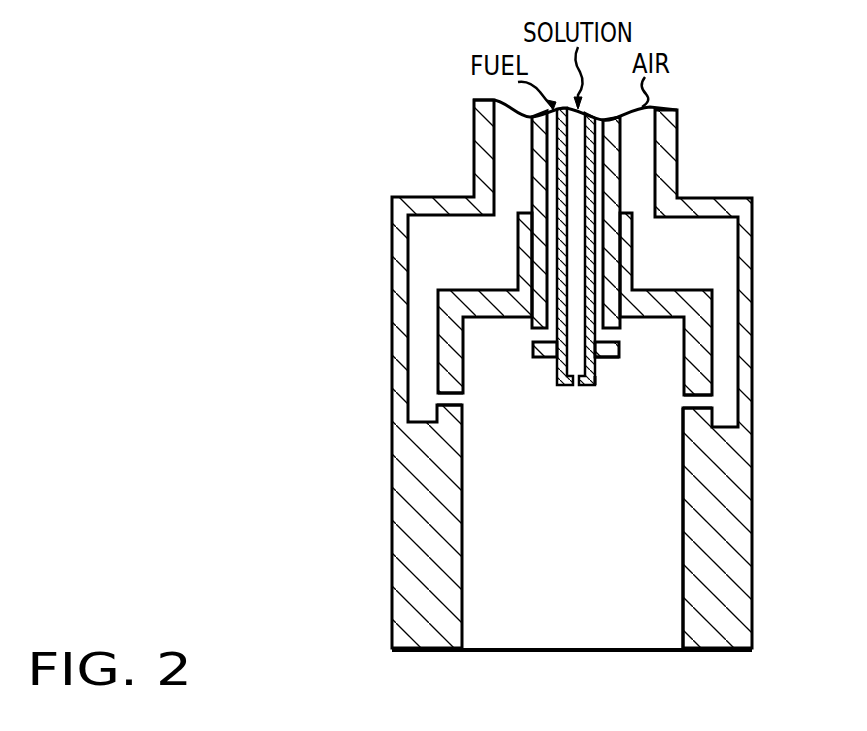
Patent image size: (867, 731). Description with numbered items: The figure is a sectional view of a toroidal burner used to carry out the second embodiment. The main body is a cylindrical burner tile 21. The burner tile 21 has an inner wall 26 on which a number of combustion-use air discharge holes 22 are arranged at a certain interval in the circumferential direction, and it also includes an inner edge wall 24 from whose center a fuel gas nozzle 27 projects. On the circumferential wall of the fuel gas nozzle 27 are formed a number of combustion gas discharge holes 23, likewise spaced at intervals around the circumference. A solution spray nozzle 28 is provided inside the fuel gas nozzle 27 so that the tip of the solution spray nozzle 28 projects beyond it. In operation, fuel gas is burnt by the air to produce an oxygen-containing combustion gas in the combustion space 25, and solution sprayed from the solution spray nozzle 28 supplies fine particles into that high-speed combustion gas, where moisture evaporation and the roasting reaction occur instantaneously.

The burner tile 21 is at (758, 505).
The combustion-use air discharge holes 22 is at (460, 400).
The combustion gas discharge holes 23 is at (533, 340).
The inner edge wall 24 is at (660, 318).
The combustion space 25 is at (622, 653).
The inner wall 26 is at (683, 490).
The fuel gas nozzle 27 is at (618, 357).
The solution spray nozzle 28 is at (562, 388).